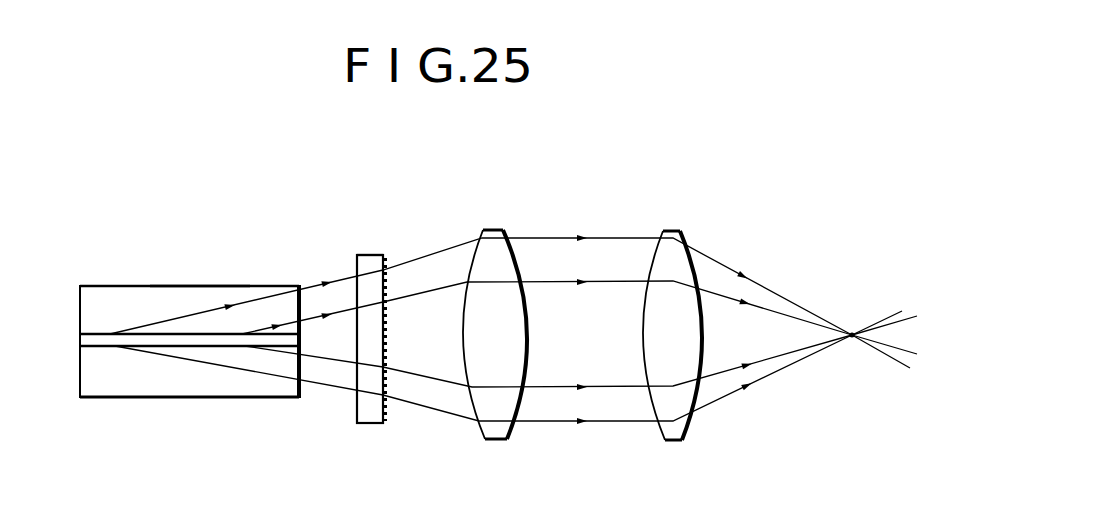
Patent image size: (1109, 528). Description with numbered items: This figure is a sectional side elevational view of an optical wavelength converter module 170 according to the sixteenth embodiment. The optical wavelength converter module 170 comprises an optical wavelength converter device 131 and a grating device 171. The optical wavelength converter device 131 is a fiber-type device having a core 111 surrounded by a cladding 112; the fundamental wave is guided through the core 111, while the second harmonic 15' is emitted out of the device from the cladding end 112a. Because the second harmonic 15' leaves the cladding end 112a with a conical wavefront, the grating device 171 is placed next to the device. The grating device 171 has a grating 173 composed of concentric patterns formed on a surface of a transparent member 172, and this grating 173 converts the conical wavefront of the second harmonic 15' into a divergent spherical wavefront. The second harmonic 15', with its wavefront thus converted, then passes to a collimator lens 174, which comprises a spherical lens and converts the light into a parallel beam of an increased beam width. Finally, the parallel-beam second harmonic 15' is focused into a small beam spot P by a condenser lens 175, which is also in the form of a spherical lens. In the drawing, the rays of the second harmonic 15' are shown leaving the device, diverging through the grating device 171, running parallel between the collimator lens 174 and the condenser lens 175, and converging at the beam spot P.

The optical wavelength converter module 170 is at (325, 173).
The cladding 112 is at (110, 310).
The cladding end 112a is at (296, 367).
The core 111 is at (118, 350).
The optical wavelength converter device 131 is at (176, 268).
The second harmonic 15' is at (513, 329).
The grating device 171 is at (372, 238).
The transparent member 172 is at (380, 410).
The grating 173 is at (384, 340).
The collimator lens 174 is at (500, 228).
The condenser lens 175 is at (673, 229).
The beam spot P is at (852, 338).